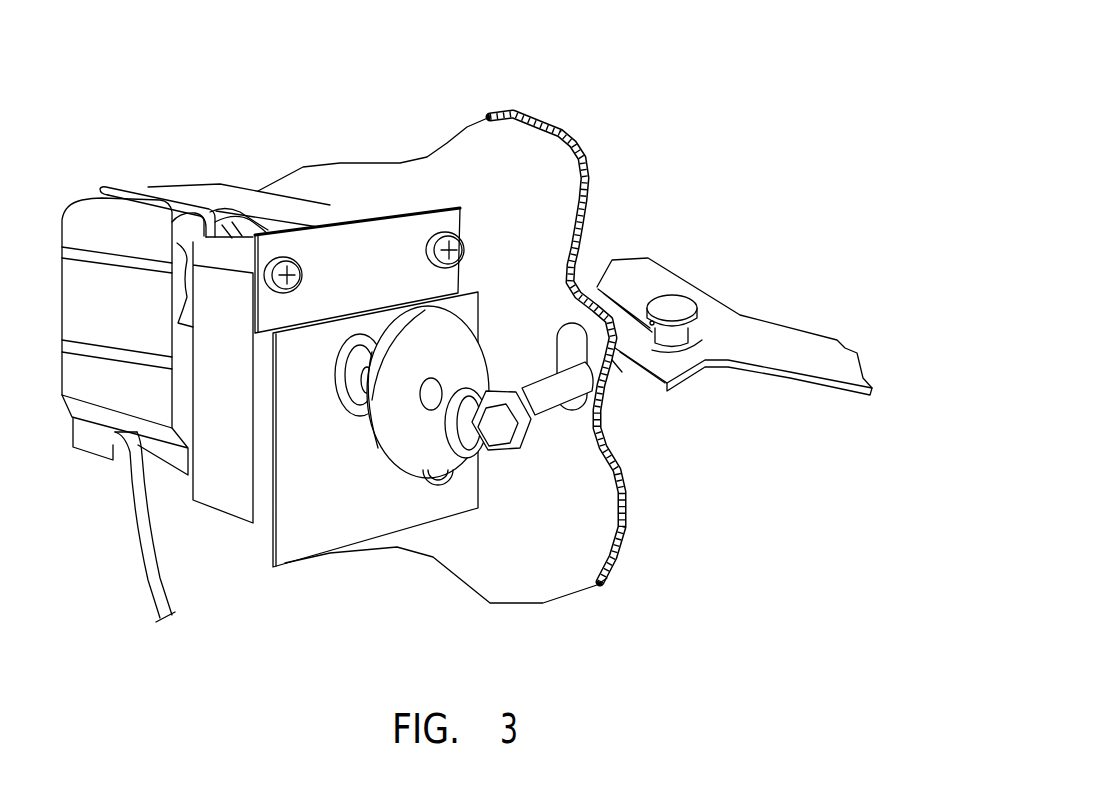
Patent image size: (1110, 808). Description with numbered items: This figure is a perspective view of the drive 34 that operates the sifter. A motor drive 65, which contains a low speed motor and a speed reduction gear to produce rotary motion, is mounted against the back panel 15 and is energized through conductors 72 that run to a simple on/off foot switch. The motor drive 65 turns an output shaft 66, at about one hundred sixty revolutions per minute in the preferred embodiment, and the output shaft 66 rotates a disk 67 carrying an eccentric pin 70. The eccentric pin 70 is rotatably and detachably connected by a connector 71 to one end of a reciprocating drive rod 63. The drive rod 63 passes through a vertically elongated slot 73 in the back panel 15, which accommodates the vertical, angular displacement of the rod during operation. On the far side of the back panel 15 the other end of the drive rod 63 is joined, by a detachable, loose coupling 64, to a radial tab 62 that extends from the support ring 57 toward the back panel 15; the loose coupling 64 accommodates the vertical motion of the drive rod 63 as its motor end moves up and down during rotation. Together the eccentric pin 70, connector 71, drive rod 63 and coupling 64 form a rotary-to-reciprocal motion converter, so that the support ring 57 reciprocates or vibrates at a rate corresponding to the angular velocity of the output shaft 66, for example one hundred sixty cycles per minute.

The back panel 15 is at (511, 116).
The drive assembly 34 is at (678, 82).
The support ring 57 is at (797, 350).
The radial tab 62 is at (697, 373).
The drive rod 63 is at (612, 363).
The loose coupling 64 is at (700, 328).
The motor drive 65 is at (155, 152).
The output shaft 66 is at (431, 409).
The disk 67 is at (385, 432).
The eccentric pin 70 is at (440, 472).
The connector 71 is at (480, 452).
The conductors 72 is at (155, 593).
The vertically elongated slot 73 is at (564, 322).